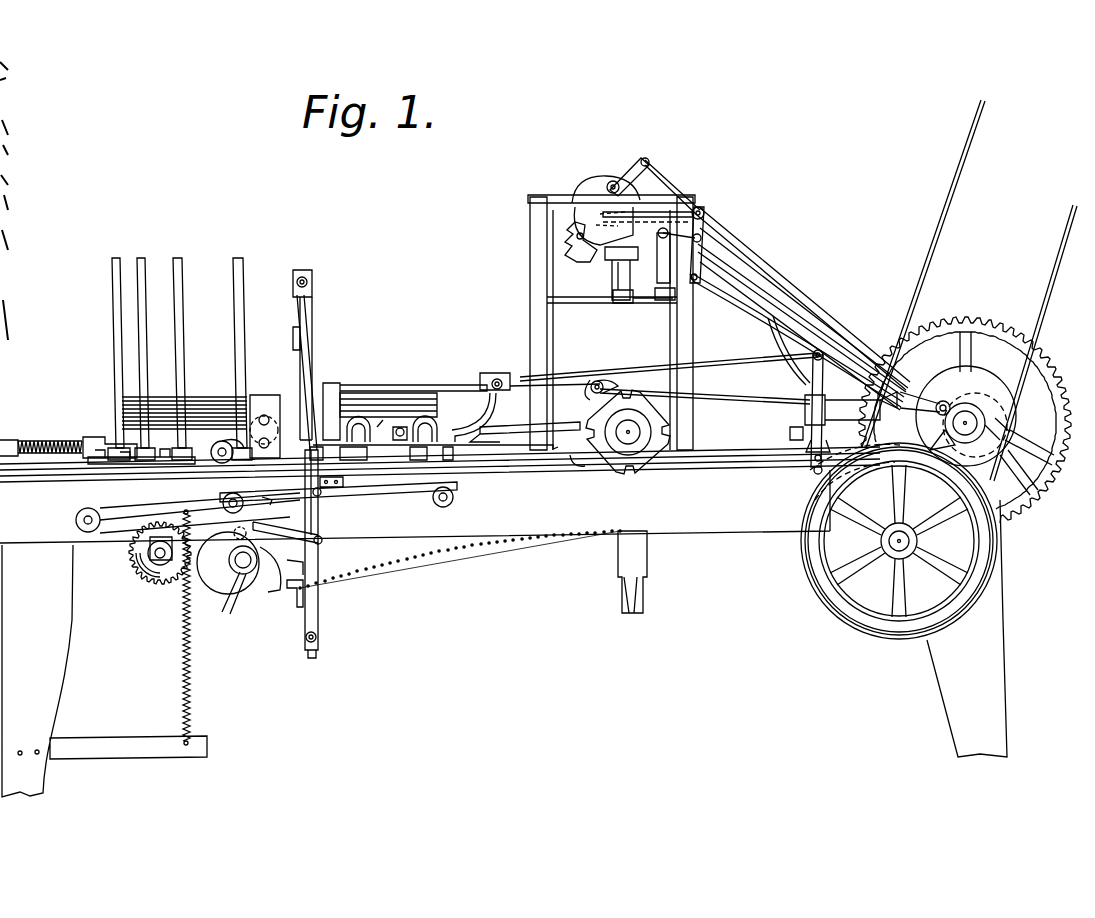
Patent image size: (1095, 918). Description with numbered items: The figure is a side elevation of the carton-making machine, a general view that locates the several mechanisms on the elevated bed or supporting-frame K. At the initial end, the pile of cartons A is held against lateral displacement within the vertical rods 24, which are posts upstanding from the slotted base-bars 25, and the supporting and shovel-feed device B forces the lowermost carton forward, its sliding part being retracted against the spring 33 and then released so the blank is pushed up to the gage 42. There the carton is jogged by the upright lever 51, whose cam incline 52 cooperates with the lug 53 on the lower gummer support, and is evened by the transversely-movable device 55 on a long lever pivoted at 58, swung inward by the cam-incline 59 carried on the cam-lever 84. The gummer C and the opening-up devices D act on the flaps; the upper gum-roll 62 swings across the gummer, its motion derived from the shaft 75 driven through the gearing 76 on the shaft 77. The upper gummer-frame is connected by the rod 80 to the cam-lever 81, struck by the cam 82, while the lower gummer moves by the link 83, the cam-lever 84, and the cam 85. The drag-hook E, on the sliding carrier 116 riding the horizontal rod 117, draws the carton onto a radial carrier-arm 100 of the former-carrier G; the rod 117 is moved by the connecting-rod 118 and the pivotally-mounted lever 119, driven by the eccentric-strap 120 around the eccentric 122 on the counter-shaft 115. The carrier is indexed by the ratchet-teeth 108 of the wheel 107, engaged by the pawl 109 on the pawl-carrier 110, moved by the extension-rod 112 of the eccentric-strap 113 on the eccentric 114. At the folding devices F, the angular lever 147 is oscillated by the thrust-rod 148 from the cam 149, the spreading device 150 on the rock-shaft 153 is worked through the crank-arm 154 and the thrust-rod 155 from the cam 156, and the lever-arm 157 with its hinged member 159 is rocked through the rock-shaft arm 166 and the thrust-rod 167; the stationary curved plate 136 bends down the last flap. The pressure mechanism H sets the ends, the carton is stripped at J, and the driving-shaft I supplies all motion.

The vertical rods 24 is at (114, 350).
The pile of cartons A is at (212, 394).
The shovel-feed device B is at (116, 440).
The spring 33 is at (60, 440).
The slotted base-bars 25 is at (135, 465).
The cam-lever 81 is at (272, 500).
The rod 80 is at (309, 320).
The gummer C is at (314, 368).
The horizontal rod 117 is at (358, 386).
The opening-up devices D is at (398, 420).
The upper gum-roll 62 is at (377, 427).
The transversely-movable device 55 is at (407, 433).
The gage 42 is at (437, 457).
The cam-incline 59 is at (246, 506).
The cam 82 is at (228, 560).
The shaft 77 is at (236, 602).
The cam surface or incline 52 is at (270, 592).
The gearing 76 is at (165, 590).
The shaft 75 is at (148, 565).
The cam-lever 84 is at (326, 543).
The cam 85 is at (330, 573).
The upright lever 51 is at (318, 590).
The link 83 is at (318, 577).
The lug 53 is at (295, 597).
The drag-hook E is at (440, 420).
The sliding carrier 116 is at (496, 377).
The former-carrier G is at (525, 419).
The radial revoluble carrier-arms 100 is at (460, 422).
The stripping location J is at (656, 584).
The flap folding devices F is at (624, 308).
The lever-arm 157 is at (586, 192).
The hinged member 159 is at (580, 250).
The rock-shaft arm 166 is at (637, 162).
The spreading device 150 is at (630, 237).
The cam or eccentric 156 is at (650, 265).
The rock-shaft 153 is at (705, 212).
The crank-arm 154 is at (716, 222).
The angular lever 147 is at (722, 252).
The stationary curved plate 136 is at (722, 264).
The cam-operated thrust-rod 155 is at (745, 290).
The thrust-rod 148 is at (800, 300).
The cam-operated thrust-rod 167 is at (870, 395).
The connecting-rod 118 is at (735, 368).
The extension-rod 112 is at (752, 397).
The end setting or pressure mechanism H is at (779, 428).
The pivotally-mounted lever 119 is at (810, 452).
The pawl 109 is at (595, 381).
The pawl-carrier 110 is at (581, 397).
The disk or wheel 107 is at (648, 455).
The ratchet-teeth 108 is at (632, 476).
The pivot 58 is at (596, 465).
The eccentric-strap 120 is at (1010, 372).
The eccentric-strap 113 is at (964, 413).
The counter-shaft 115 is at (972, 410).
The eccentric 114 is at (925, 410).
The cam 149 is at (897, 357).
The eccentric 122 is at (1002, 398).
The driving-shaft I is at (897, 542).
The elevated bed or supporting-frame K is at (503, 622).